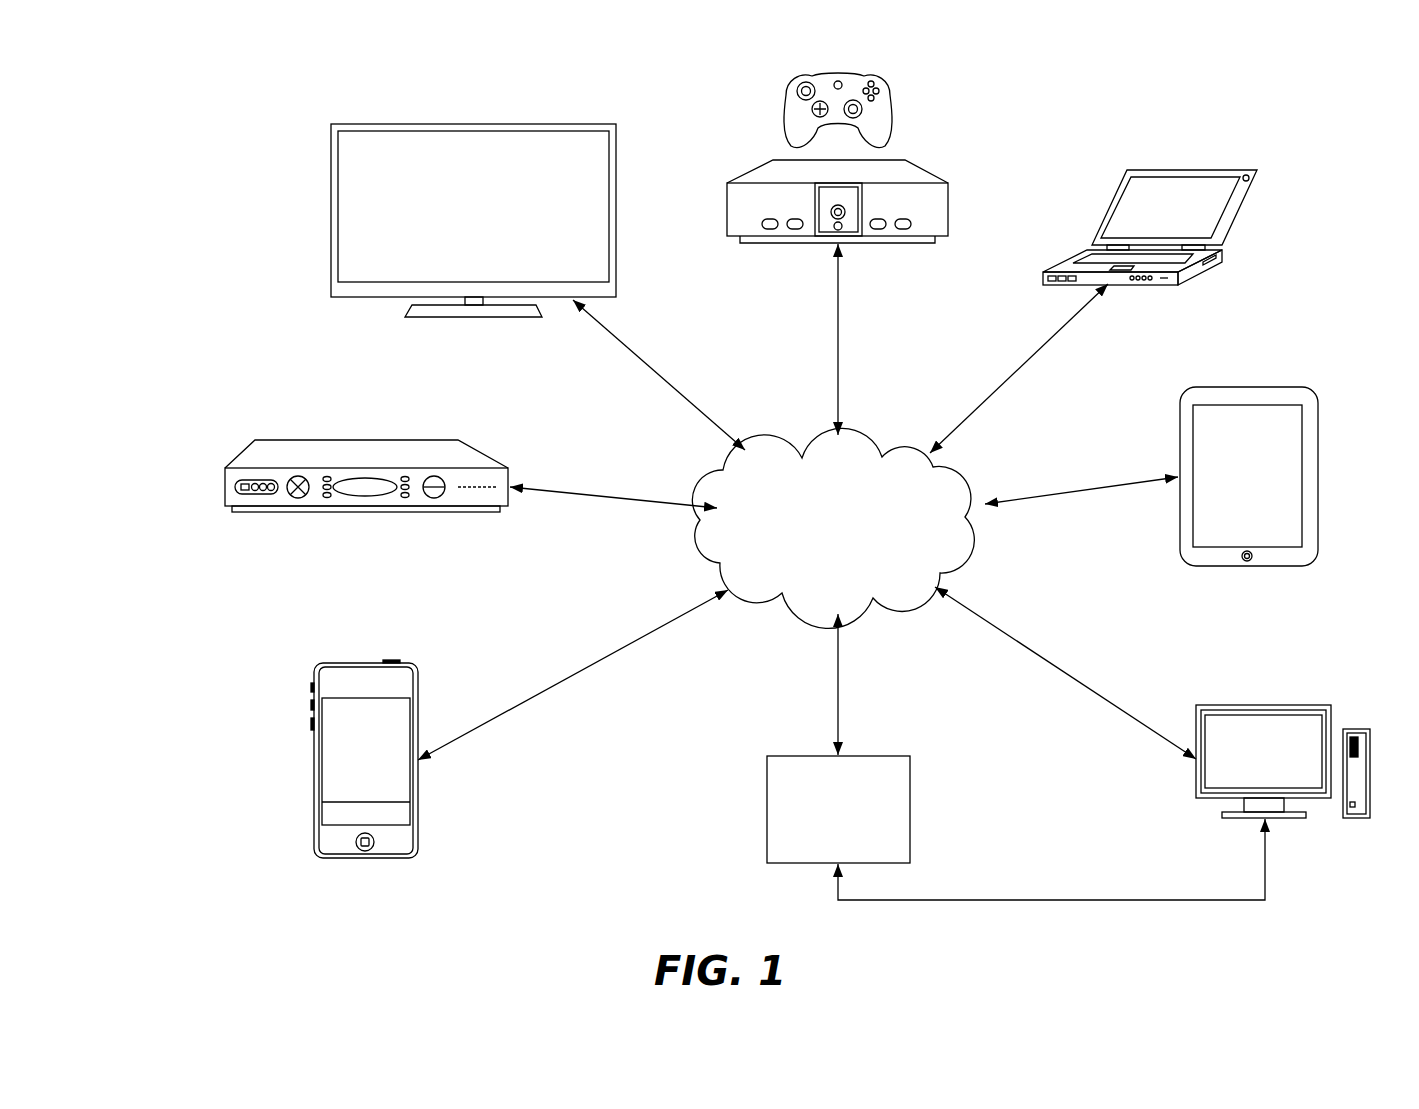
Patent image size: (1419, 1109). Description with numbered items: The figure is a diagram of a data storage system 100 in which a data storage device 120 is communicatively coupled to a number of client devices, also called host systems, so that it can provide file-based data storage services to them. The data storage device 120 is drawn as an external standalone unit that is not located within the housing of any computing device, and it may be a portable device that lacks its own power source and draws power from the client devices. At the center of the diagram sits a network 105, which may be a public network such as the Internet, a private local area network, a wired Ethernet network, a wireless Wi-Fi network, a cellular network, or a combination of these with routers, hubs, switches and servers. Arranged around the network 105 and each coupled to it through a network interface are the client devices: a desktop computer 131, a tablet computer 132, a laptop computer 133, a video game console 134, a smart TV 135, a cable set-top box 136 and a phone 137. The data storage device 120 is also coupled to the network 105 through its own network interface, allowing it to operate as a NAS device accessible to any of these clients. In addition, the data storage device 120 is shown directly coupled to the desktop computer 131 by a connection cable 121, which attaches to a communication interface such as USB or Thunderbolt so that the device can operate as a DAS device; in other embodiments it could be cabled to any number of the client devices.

The data storage system 100 is at (208, 147).
The network 105 is at (833, 528).
The data storage device 120 is at (912, 810).
The connection cable 121 is at (1012, 900).
The desktop computer 131 is at (1266, 705).
The tablet computer 132 is at (1248, 387).
The laptop computer 133 is at (1193, 170).
The video game console 134 is at (918, 167).
The smart TV 135 is at (472, 124).
The cable set-top box 136 is at (375, 440).
The phone 137 is at (365, 663).